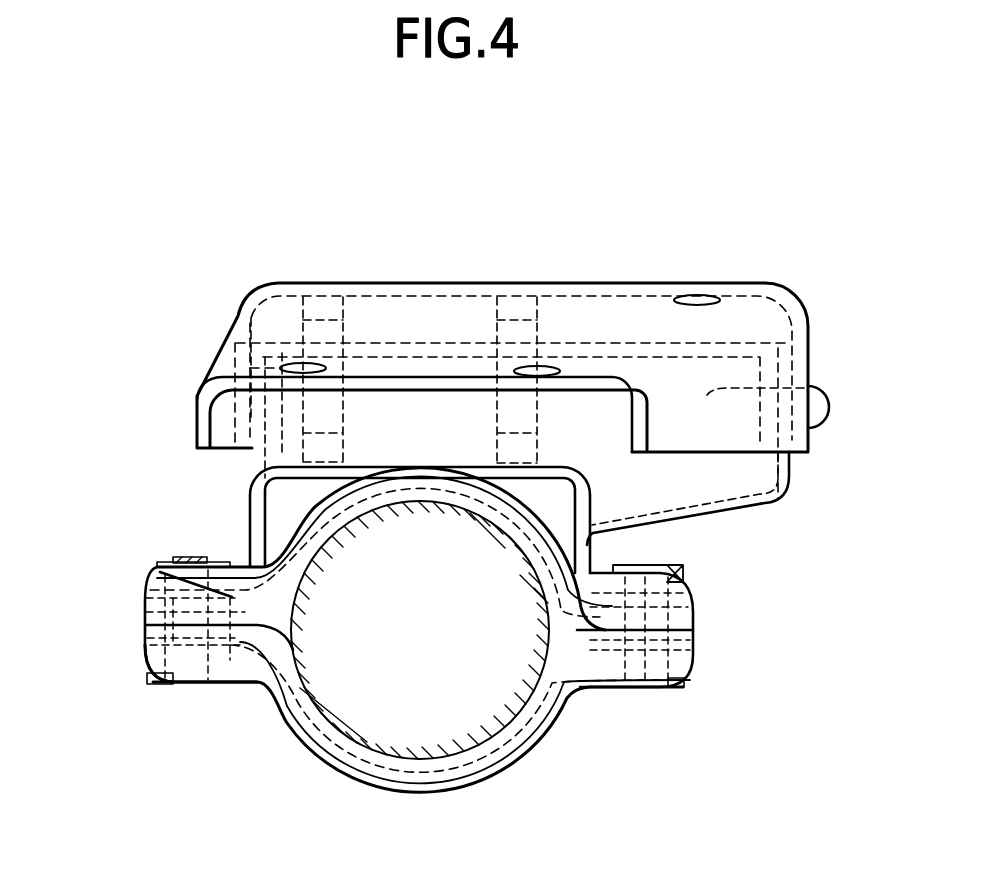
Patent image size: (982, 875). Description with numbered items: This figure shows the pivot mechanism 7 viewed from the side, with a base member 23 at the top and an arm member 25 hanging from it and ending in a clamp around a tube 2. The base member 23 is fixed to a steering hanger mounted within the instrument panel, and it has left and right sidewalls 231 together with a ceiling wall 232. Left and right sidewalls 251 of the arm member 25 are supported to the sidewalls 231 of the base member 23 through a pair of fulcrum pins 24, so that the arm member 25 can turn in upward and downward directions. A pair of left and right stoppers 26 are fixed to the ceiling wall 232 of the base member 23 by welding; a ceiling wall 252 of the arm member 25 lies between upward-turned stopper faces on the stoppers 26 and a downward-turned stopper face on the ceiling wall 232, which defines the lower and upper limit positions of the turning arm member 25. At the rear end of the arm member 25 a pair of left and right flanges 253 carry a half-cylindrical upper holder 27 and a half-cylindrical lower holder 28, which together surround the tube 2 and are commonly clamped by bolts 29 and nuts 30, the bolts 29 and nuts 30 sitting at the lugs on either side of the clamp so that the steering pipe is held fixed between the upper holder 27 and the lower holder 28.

The handlebar 2 is at (552, 620).
The pivot mechanism 7 is at (284, 721).
The base member 23 is at (562, 285).
The sidewall of base member 231 is at (852, 320).
The ceiling wall of base member 232 is at (408, 328).
The fulcrum pin 24 is at (200, 378).
The arm member 25 is at (740, 515).
The sidewall of arm member 251 is at (727, 388).
The ceiling wall of arm member 252 is at (440, 470).
The flange 253 is at (745, 640).
The stopper 26 is at (347, 413).
The upper holder 27 is at (533, 517).
The lower holder 28 is at (507, 768).
The bolt 29 is at (157, 684).
The nut 30 is at (160, 562).